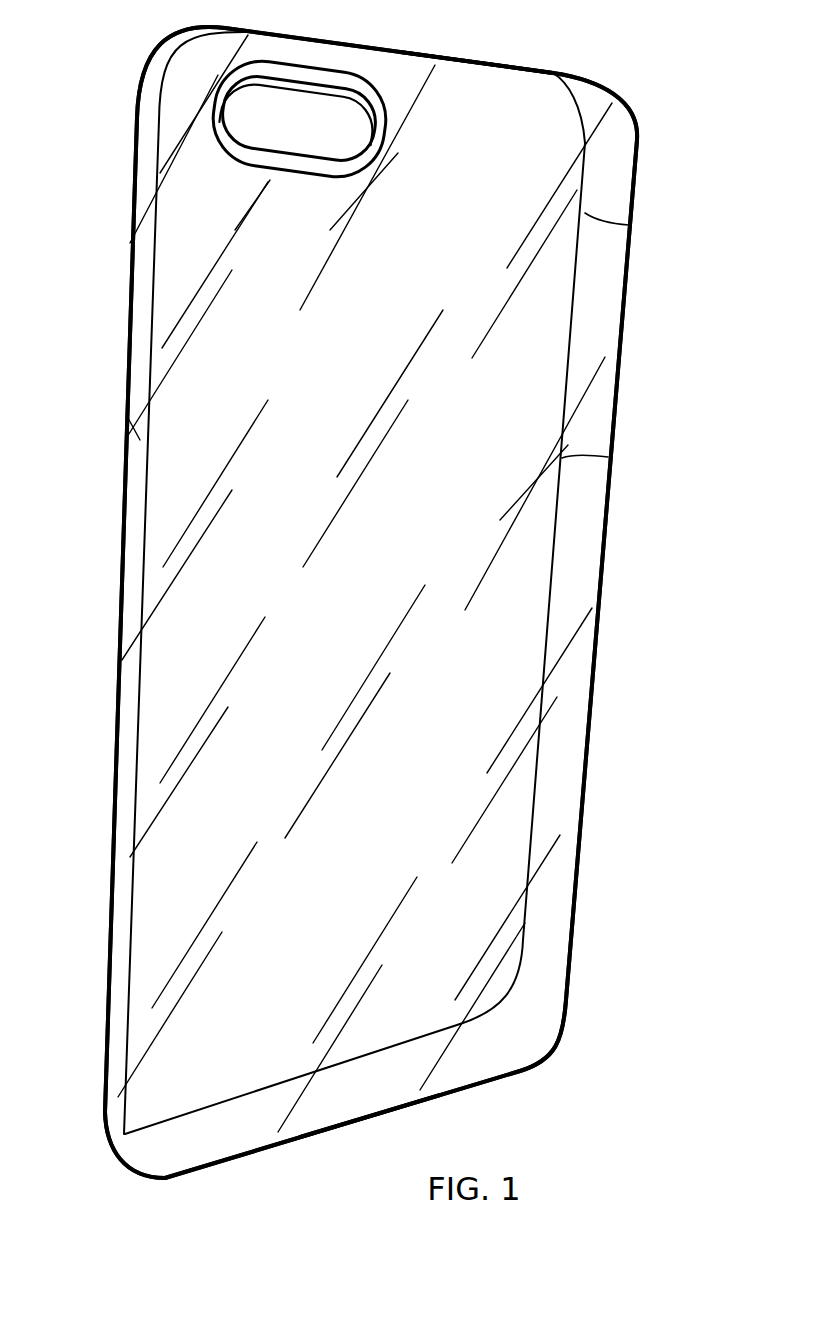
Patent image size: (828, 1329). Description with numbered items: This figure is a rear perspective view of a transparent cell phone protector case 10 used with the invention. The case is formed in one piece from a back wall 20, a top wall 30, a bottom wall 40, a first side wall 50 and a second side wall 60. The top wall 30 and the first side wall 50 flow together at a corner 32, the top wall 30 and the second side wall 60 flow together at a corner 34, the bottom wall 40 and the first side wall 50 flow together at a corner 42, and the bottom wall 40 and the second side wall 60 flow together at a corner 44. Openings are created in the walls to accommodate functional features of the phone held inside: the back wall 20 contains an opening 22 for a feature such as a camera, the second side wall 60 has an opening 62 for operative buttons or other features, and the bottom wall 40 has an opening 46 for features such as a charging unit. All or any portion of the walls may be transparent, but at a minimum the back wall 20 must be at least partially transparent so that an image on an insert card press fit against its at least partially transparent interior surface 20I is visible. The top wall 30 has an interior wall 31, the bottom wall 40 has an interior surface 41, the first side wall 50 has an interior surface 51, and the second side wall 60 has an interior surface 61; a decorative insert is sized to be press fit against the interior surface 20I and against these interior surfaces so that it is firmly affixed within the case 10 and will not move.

The cell phone protector case 10 is at (642, 56).
The back wall 20 is at (344, 342).
The interior surface of the back wall 20I is at (160, 423).
The opening 22 is at (283, 132).
The top wall 30 is at (484, 62).
The interior wall of the top wall 31 is at (506, 66).
The corner 32 is at (145, 98).
The corner 34 is at (638, 137).
The bottom wall 40 is at (440, 1096).
The interior surface of the bottom wall 41 is at (401, 1048).
The corner 42 is at (106, 1134).
The corner 44 is at (556, 1036).
The opening 46 is at (366, 1113).
The first side wall 50 is at (118, 603).
The interior surface of the first side wall 51 is at (141, 663).
The second side wall 60 is at (603, 520).
The interior surface of the second side wall 61 is at (549, 596).
The opening 62 is at (621, 280).